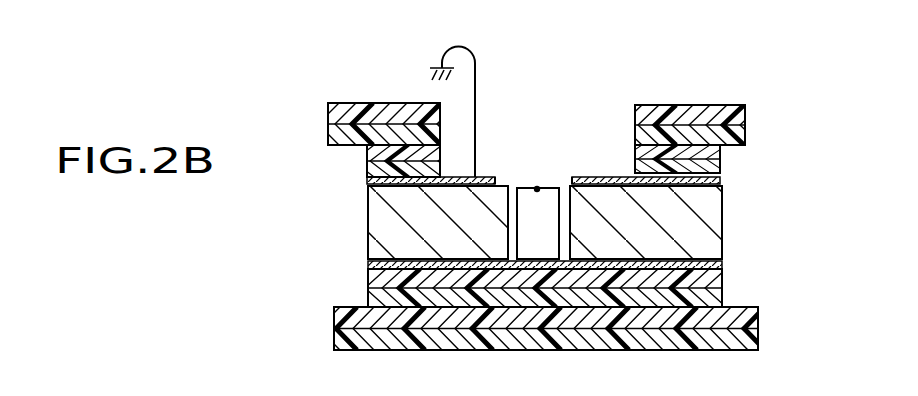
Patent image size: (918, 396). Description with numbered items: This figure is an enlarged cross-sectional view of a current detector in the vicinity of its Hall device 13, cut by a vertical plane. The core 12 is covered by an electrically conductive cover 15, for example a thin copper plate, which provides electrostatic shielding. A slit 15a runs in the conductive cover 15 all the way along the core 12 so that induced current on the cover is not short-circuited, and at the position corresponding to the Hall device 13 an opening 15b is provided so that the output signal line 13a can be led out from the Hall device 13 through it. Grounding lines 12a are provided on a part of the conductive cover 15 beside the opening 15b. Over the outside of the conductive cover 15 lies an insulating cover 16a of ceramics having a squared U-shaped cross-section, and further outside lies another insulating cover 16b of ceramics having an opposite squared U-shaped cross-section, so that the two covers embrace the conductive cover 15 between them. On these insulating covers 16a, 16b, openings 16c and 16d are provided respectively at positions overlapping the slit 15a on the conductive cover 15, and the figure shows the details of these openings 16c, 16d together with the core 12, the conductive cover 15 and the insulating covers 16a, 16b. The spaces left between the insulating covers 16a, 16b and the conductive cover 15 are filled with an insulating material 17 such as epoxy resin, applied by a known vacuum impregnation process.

The core 12 is at (373, 240).
The grounding line 12a is at (447, 51).
The Hall device 13 is at (540, 238).
The output signal line 13a is at (537, 189).
The conductive cover 15 is at (720, 182).
The slit 15a is at (560, 178).
The opening 15b is at (517, 178).
The insulating cover 16a is at (367, 157).
The insulating cover 16b is at (358, 112).
The opening 16c is at (628, 155).
The opening 16d is at (448, 116).
The insulating material 17 is at (720, 167).